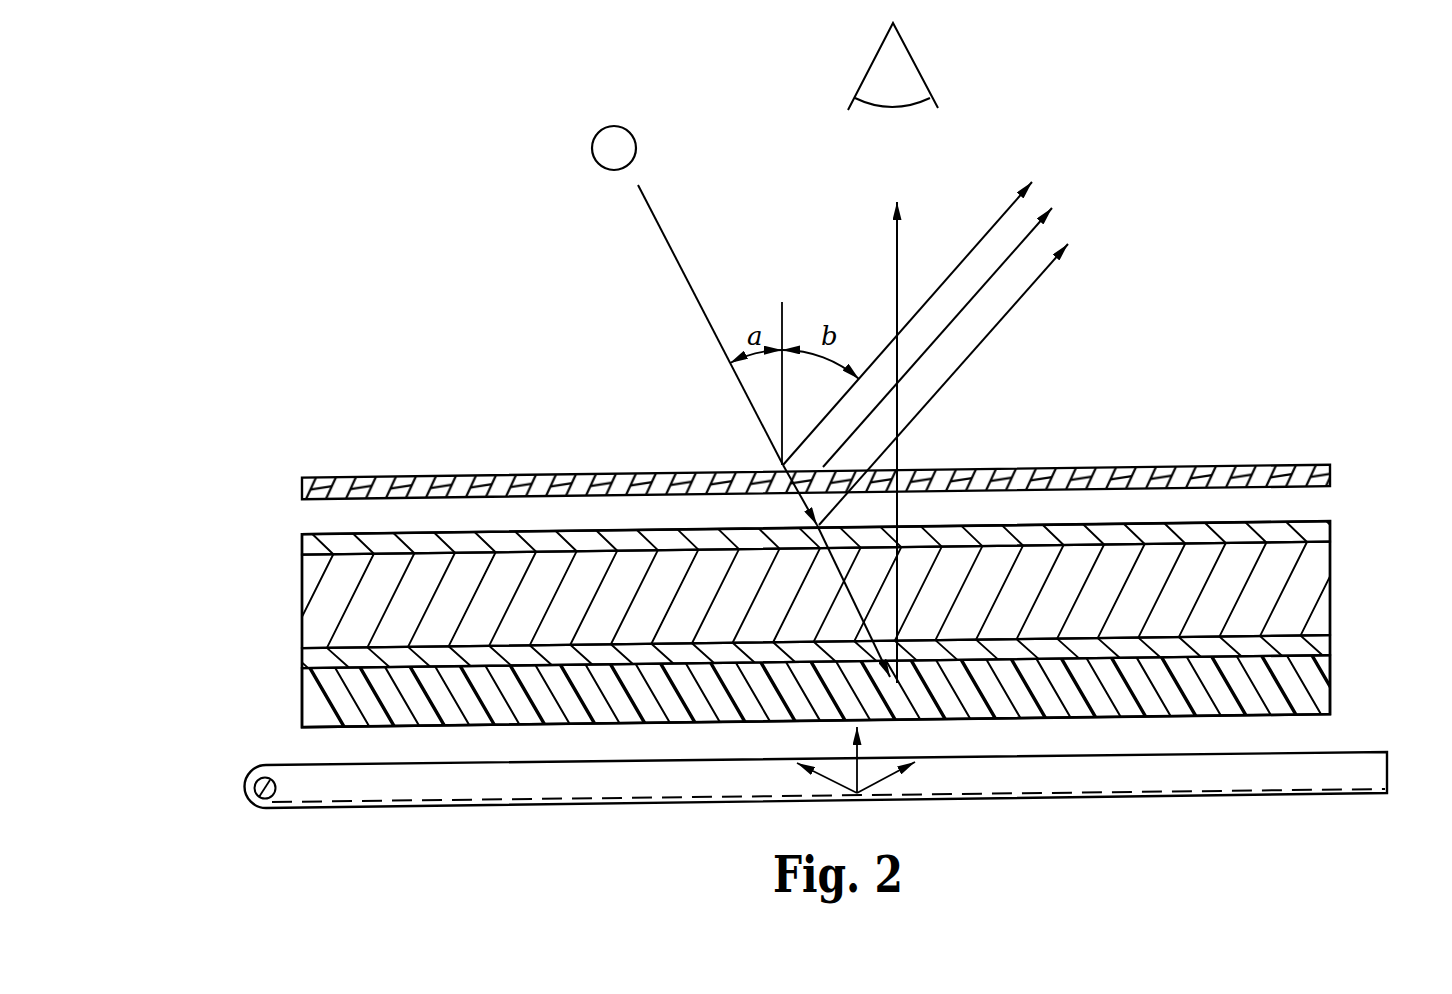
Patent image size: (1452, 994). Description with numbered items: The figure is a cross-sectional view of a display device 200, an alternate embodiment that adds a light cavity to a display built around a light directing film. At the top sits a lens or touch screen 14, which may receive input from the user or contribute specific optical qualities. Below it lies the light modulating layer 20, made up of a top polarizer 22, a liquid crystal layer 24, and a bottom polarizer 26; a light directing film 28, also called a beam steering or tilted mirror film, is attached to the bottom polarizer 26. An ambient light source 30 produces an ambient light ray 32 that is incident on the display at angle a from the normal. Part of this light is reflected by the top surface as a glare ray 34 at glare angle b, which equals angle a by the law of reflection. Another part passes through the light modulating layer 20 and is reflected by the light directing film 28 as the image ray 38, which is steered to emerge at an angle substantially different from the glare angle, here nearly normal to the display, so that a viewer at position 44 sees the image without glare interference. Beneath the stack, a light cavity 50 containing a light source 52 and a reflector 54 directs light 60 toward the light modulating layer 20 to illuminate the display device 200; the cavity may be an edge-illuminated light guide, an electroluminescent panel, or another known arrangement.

The lens or touch screen 14 is at (302, 485).
The light modulating layer 20 is at (1337, 521).
The top polarizer 22 is at (302, 543).
The liquid crystal layer 24 is at (310, 582).
The bottom polarizer 26 is at (308, 657).
The light directing film 28 is at (317, 708).
The ambient light source 30 is at (629, 128).
The ambient light ray 32 is at (673, 252).
The glare ray 34 is at (983, 233).
The image ray 38 is at (896, 275).
The viewer position 44 is at (920, 72).
The light cavity 50 is at (1390, 768).
The light source 52 is at (252, 802).
The reflector 54 is at (252, 775).
The light 60 is at (862, 770).
The display device 200 is at (1165, 377).